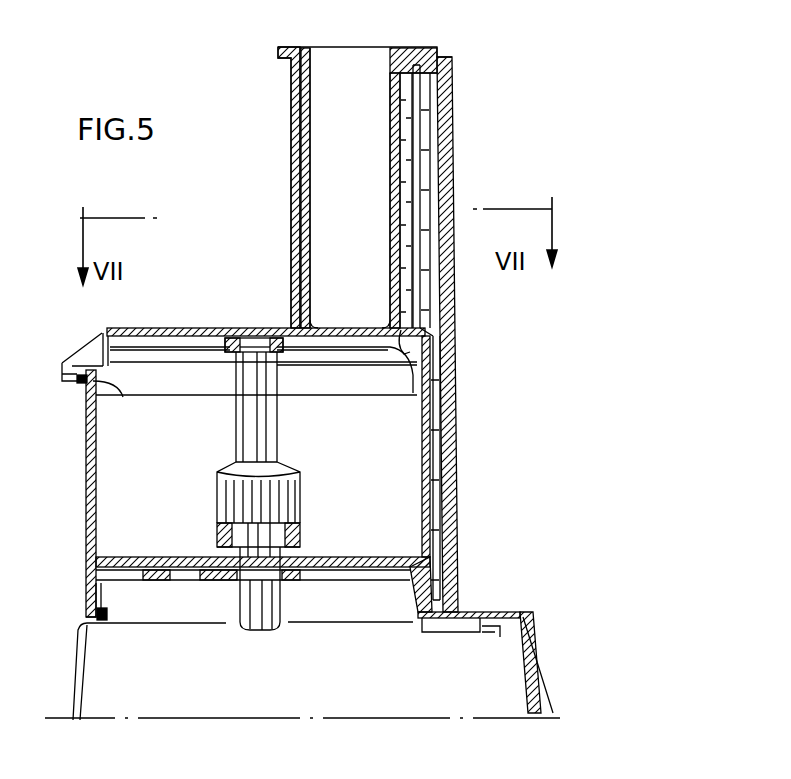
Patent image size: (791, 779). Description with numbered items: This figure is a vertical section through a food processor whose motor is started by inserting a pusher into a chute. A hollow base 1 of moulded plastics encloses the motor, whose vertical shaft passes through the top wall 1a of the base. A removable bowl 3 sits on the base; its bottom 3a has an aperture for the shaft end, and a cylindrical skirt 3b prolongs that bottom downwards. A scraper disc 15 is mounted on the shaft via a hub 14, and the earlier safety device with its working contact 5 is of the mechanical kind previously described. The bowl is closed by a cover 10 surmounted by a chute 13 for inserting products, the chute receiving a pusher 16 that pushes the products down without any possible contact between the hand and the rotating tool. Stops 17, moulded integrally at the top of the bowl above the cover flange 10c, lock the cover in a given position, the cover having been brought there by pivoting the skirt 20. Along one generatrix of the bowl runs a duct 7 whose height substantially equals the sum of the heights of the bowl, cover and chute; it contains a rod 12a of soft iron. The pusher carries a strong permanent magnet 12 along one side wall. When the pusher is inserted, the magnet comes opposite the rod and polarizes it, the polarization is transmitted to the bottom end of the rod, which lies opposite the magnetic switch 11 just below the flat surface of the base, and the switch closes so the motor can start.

The hollow base 1 is at (532, 668).
The top wall of the base 1a is at (103, 608).
The bowl 3 is at (84, 476).
The bottom of the bowl 3a is at (343, 562).
The cylindrical skirt 3b is at (86, 592).
The working contact 5 is at (293, 155).
The duct 7 is at (450, 415).
The cover 10 is at (177, 330).
The flange of the cover 10c is at (60, 370).
The magnetic switch 11 is at (438, 628).
The permanent magnet 12 is at (405, 183).
The rod of ferromagnetic material 12a is at (430, 182).
The chute 13 is at (293, 102).
The hub 14 is at (267, 417).
The scraper disc 15 is at (189, 352).
The pusher 16 is at (358, 72).
The stop 17 is at (80, 384).
The skirt 20 is at (125, 398).